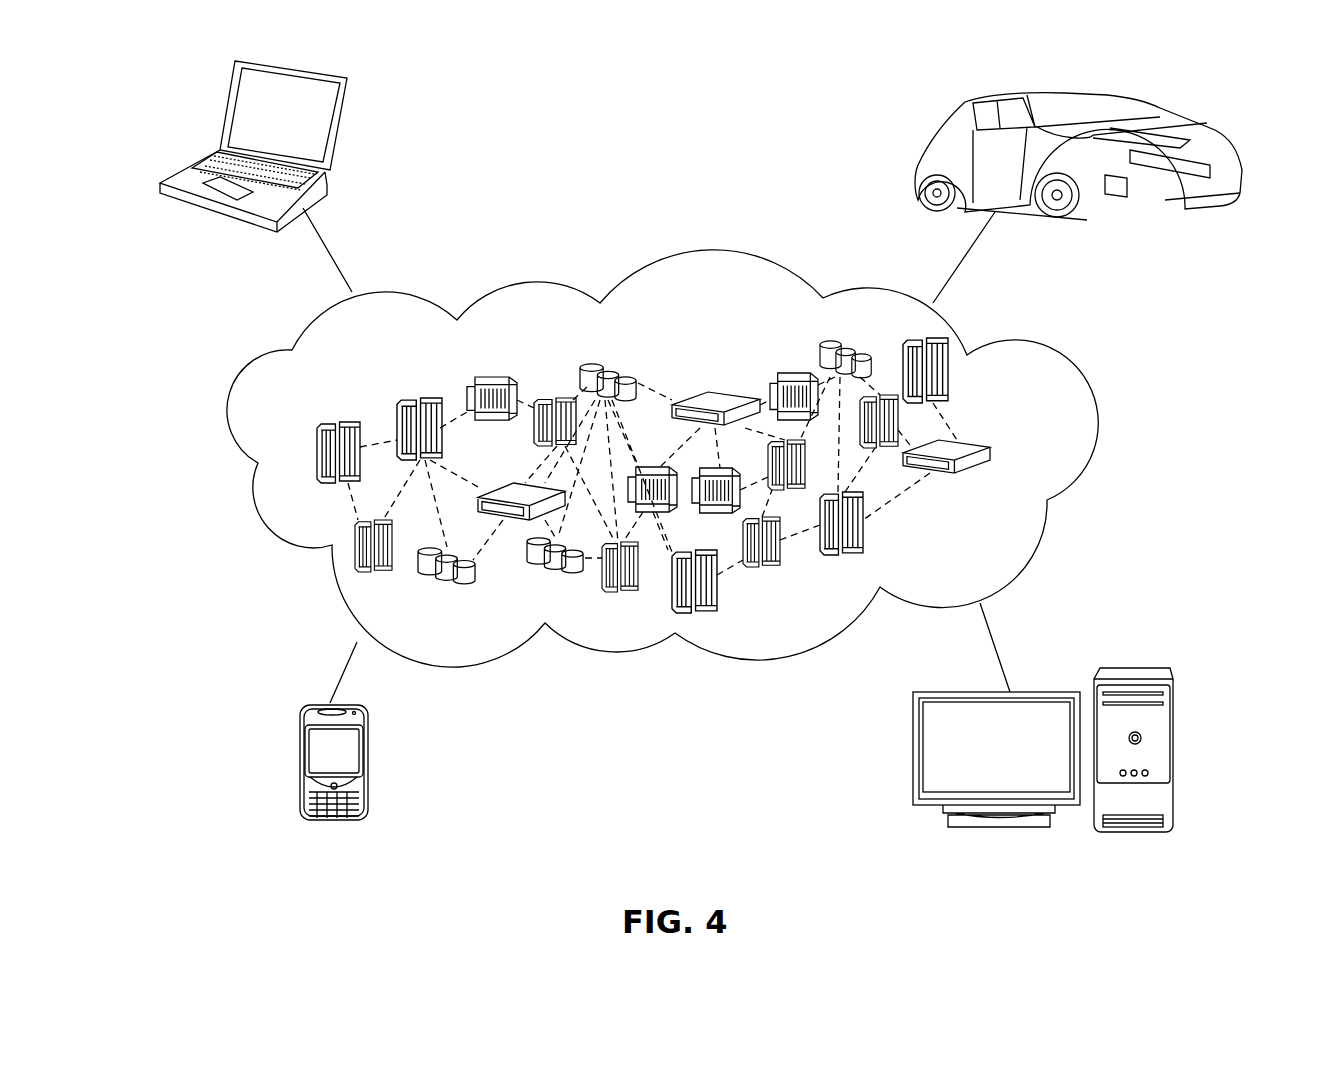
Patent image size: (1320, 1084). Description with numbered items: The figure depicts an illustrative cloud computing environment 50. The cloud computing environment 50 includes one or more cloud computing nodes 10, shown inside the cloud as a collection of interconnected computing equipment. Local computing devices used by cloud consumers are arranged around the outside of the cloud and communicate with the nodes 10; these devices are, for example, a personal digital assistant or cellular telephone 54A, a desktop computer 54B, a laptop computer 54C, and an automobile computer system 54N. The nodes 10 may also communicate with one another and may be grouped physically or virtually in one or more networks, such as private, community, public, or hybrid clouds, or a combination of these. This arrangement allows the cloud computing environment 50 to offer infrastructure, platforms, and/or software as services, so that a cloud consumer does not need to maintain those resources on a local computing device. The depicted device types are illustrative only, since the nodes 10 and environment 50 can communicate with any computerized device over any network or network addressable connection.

The cloud computing environment 50 is at (1053, 365).
The cloud computing nodes 10 is at (1030, 452).
The personal digital assistant (PDA) or cellular telephone 54A is at (300, 767).
The desktop computer 54B is at (1137, 668).
The laptop computer 54C is at (347, 130).
The automobile computer system 54N is at (923, 138).